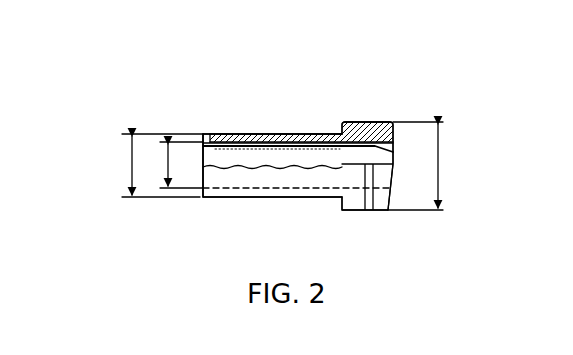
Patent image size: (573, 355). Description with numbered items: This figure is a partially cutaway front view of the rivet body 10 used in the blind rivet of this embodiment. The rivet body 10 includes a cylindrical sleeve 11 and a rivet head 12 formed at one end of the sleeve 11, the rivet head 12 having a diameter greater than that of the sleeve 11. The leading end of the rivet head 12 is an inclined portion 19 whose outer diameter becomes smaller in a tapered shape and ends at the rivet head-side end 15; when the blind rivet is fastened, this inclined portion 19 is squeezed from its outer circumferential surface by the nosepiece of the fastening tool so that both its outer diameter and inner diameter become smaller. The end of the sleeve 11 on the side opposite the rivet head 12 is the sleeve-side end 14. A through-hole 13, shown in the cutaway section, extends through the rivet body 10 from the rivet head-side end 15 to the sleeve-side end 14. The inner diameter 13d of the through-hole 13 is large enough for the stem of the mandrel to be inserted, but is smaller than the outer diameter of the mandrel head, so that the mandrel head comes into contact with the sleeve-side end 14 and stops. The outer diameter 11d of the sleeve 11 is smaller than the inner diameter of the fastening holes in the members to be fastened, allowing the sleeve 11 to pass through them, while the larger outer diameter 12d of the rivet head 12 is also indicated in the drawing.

The rivet body 10 is at (326, 80).
The sleeve 11 is at (245, 135).
The rivet head 12 is at (350, 121).
The through-hole 13 is at (393, 152).
The sleeve-side end 14 is at (203, 133).
The rivet head-side end 15 is at (395, 134).
The inclined portion 19 is at (380, 121).
The outer diameter of the sleeve 11d is at (151, 165).
The inner diameter of the through-hole 13d is at (170, 165).
The outer diameter of the rivet head 12d is at (430, 166).